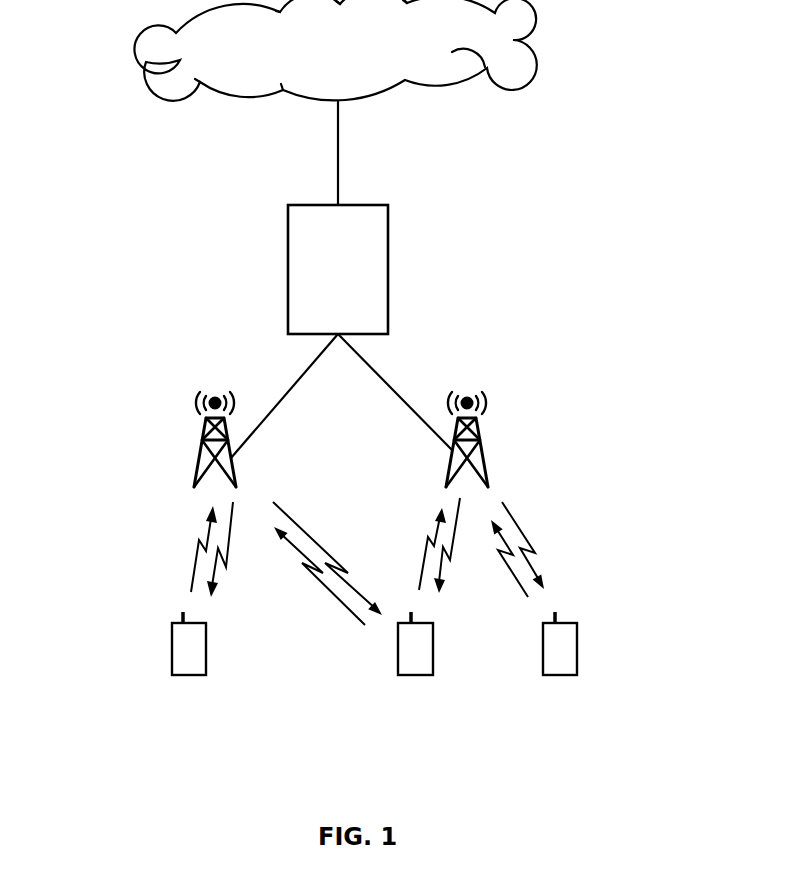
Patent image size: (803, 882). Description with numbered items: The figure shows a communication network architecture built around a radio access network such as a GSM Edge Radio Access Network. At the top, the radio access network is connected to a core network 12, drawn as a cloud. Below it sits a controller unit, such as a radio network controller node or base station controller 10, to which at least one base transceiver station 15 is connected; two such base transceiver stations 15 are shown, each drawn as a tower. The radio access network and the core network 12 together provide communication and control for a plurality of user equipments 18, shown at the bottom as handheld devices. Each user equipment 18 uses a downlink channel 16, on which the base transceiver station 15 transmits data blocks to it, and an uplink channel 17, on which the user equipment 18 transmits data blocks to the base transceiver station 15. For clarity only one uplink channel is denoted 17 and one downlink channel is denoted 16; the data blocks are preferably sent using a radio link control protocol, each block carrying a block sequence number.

The base station controller 10 is at (388, 262).
The core network 12 is at (533, 32).
The base transceiver station 15 is at (204, 449).
The downlink channel 16 is at (283, 509).
The uplink channel 17 is at (198, 546).
The user equipment 18 is at (172, 647).